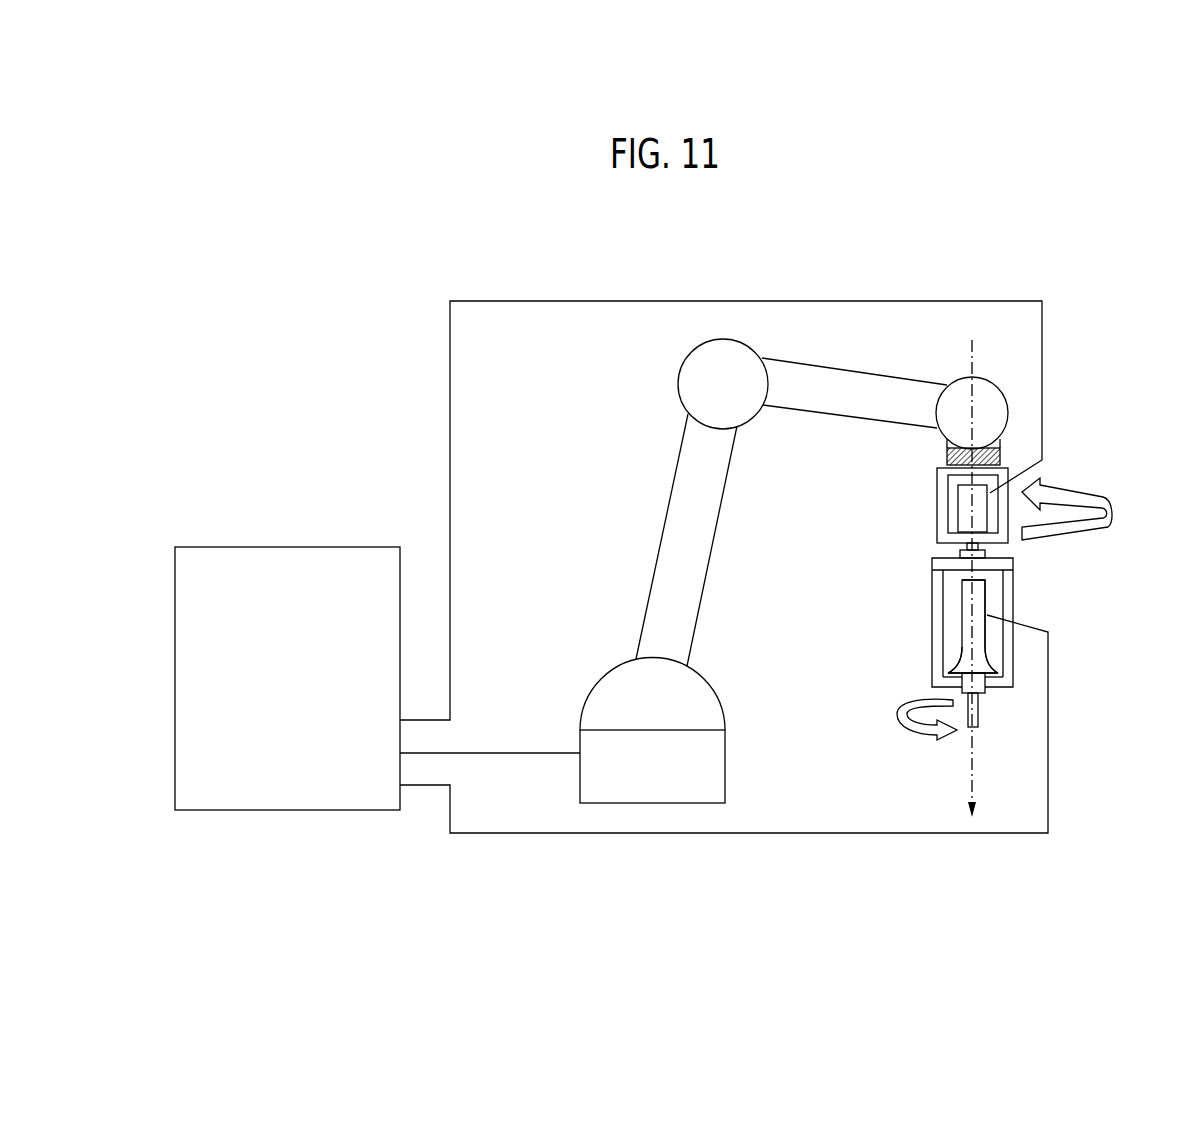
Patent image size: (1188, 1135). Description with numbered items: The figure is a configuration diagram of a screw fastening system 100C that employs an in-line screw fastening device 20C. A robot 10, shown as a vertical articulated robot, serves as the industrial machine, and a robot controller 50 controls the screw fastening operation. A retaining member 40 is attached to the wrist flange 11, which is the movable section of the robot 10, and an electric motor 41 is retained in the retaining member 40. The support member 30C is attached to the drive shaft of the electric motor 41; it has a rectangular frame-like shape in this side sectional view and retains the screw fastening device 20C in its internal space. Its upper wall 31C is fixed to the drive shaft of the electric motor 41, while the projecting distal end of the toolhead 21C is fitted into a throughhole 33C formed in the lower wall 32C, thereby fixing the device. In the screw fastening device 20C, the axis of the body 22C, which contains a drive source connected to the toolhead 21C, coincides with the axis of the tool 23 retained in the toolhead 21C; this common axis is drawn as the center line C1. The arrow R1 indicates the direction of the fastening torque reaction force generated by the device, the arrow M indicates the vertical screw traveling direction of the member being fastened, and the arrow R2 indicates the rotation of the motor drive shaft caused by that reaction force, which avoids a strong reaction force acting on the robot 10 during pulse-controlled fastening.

The screw fastening system 100C is at (790, 248).
The robot controller 50 is at (350, 545).
The robot 10 is at (838, 361).
The central axis C1 is at (973, 558).
The wrist flange 11 is at (1002, 460).
The retaining member 40 is at (928, 475).
The electric motor 41 is at (958, 515).
The direction of rotation of the drive shaft R2 is at (1093, 488).
The support member 30C is at (922, 612).
The upper wall 31C is at (940, 558).
The lower wall 32C is at (943, 690).
The throughhole 33C is at (985, 690).
The in-line screw fastening device 20C is at (997, 602).
The body 22C is at (985, 587).
The toolhead 21C is at (997, 667).
The tool 23 is at (980, 710).
The direction of fastening torque reaction force R1 is at (912, 735).
The screw traveling direction M is at (977, 787).